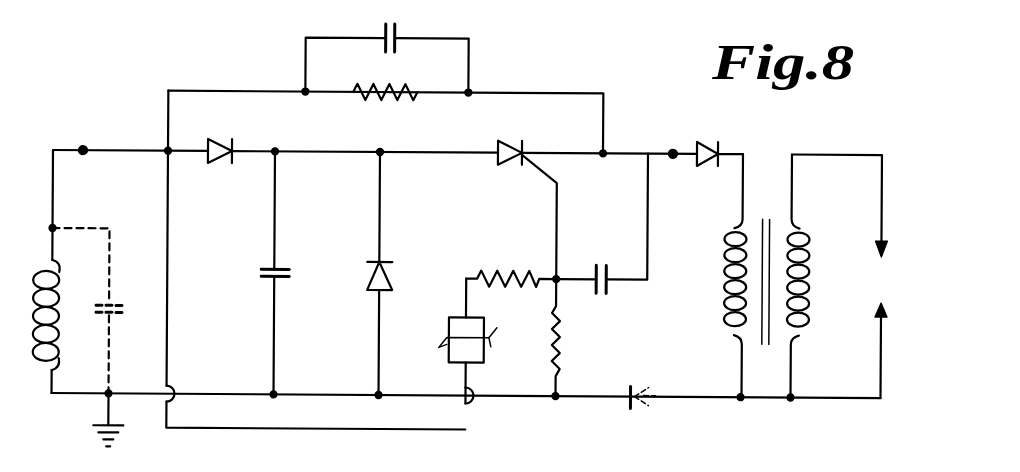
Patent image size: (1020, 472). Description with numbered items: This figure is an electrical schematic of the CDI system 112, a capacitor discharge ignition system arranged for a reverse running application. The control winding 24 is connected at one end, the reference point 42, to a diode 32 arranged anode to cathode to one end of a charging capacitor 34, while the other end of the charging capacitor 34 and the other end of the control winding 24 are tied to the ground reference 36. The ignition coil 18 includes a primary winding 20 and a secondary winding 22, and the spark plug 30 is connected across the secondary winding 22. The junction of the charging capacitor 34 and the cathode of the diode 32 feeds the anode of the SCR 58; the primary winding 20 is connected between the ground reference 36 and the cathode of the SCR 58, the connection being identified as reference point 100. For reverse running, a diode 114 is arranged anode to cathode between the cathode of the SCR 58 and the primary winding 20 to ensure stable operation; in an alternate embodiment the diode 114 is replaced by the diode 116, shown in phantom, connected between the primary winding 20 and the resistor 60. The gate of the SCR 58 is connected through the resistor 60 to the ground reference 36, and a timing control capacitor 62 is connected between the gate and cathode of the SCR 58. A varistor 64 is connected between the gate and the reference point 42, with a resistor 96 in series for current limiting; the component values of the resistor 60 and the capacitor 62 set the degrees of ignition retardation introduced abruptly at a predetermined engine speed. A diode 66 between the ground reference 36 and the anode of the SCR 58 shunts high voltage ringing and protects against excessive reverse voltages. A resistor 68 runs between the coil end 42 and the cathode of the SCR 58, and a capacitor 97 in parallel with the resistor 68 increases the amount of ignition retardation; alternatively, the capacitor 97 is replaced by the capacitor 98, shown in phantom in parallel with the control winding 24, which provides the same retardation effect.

The ignition coil 18 is at (766, 186).
The primary winding 20 is at (730, 285).
The secondary winding 22 is at (805, 270).
The control winding 24 is at (38, 300).
The spark plug 30 is at (890, 282).
The diode 32 is at (226, 136).
The charging capacitor 34 is at (268, 283).
The ground reference 36 is at (106, 414).
The reference point 42 is at (83, 148).
The SCR 58 is at (510, 134).
The resistor 60 is at (560, 346).
The timing control capacitor 62 is at (596, 268).
The varistor 64 is at (447, 362).
The diode 66 is at (366, 278).
The resistor 68 is at (380, 96).
The resistor 96 is at (512, 266).
The capacitor 97 is at (383, 28).
The capacitor 98 is at (118, 304).
The reference point 100 is at (674, 146).
The CDI system 112 is at (644, 79).
The diode 114 is at (710, 140).
The diode 116 is at (660, 370).